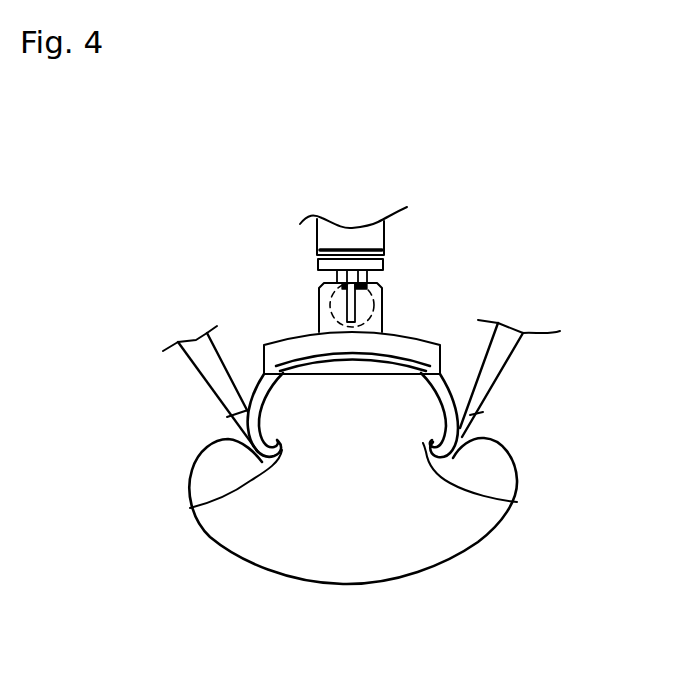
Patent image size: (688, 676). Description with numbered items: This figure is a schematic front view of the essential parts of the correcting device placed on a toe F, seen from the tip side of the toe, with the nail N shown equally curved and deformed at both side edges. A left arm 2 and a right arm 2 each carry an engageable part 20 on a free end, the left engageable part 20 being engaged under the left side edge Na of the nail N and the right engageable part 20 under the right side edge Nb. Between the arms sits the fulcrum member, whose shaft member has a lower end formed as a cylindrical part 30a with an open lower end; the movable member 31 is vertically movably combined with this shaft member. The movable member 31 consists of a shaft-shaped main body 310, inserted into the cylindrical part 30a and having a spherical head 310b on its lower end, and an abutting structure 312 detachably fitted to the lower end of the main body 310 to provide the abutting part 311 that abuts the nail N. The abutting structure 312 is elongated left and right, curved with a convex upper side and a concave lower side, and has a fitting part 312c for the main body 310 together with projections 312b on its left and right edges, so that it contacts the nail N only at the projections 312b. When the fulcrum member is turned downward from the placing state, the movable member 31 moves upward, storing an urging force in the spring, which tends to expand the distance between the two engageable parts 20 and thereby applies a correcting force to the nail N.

The cylindrical part 30a is at (348, 237).
The movable member 31 is at (421, 200).
The main body 310 is at (408, 200).
The spherical head 310b is at (443, 258).
The abutting structure 312 is at (311, 323).
The fitting part 312c is at (338, 249).
The abutting part 311 is at (198, 393).
The projection 312b is at (390, 393).
The arm 2 is at (212, 377).
The nail N is at (350, 367).
The left side edge Na is at (278, 459).
The right side edge Nb is at (428, 462).
The toe F is at (351, 544).
The engageable part 20 is at (190, 508).